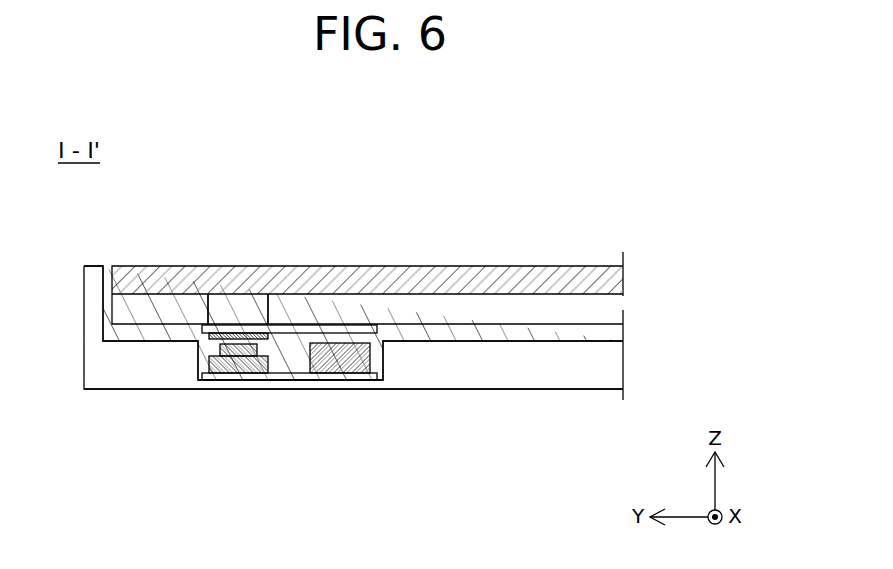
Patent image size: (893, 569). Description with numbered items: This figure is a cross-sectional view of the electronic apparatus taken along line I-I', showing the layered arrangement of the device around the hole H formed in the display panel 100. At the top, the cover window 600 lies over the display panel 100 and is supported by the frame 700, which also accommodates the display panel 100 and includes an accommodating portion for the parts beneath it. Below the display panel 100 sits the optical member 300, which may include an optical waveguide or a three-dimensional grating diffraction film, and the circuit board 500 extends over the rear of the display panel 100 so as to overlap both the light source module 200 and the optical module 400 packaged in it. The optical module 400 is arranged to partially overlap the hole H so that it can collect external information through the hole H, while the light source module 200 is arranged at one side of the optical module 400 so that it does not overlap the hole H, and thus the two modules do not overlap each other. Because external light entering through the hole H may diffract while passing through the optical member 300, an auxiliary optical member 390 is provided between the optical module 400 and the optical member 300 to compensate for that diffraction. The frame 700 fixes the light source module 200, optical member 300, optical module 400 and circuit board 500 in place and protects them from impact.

The display panel 100 is at (398, 308).
The light source module 200 is at (360, 360).
The optical member 300 is at (286, 328).
The auxiliary optical member 390 is at (223, 335).
The optical module 400 is at (228, 366).
The circuit board 500 is at (327, 375).
The cover window 600 is at (459, 277).
The frame 700 is at (610, 360).
The hole H is at (238, 294).